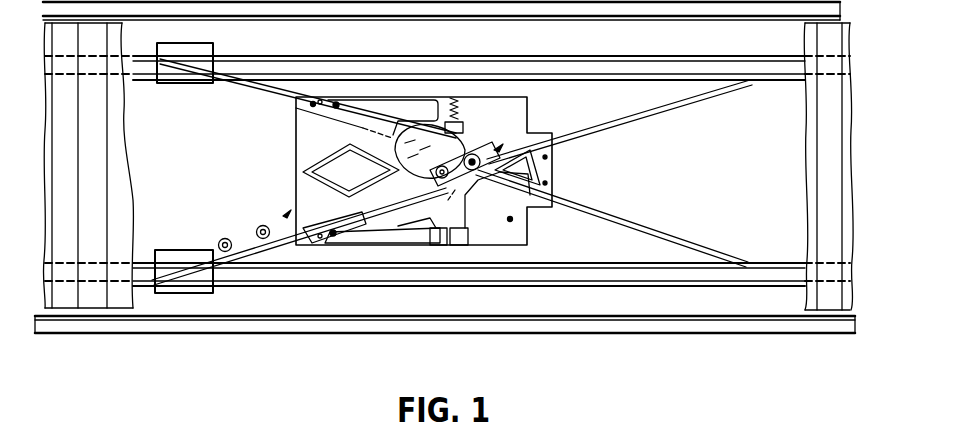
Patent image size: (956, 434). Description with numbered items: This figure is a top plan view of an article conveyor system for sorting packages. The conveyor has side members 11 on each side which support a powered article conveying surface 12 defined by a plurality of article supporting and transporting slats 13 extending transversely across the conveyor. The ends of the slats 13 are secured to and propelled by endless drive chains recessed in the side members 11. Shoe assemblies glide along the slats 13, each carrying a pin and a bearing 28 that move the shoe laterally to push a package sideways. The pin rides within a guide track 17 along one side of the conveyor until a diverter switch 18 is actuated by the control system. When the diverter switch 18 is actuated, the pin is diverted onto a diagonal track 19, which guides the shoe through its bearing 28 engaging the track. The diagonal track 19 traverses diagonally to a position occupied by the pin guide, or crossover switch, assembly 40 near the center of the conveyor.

The side members 11 is at (467, 8).
The powered article conveying surface 12 is at (97, 184).
The article supporting and transporting slats 13 is at (122, 143).
The guide track 17 is at (133, 63).
The diverter switch 18 is at (198, 48).
The diagonal track 19 is at (290, 102).
The bearing 28 is at (221, 239).
The pin guide, or crossover switch, assembly 40 is at (519, 201).